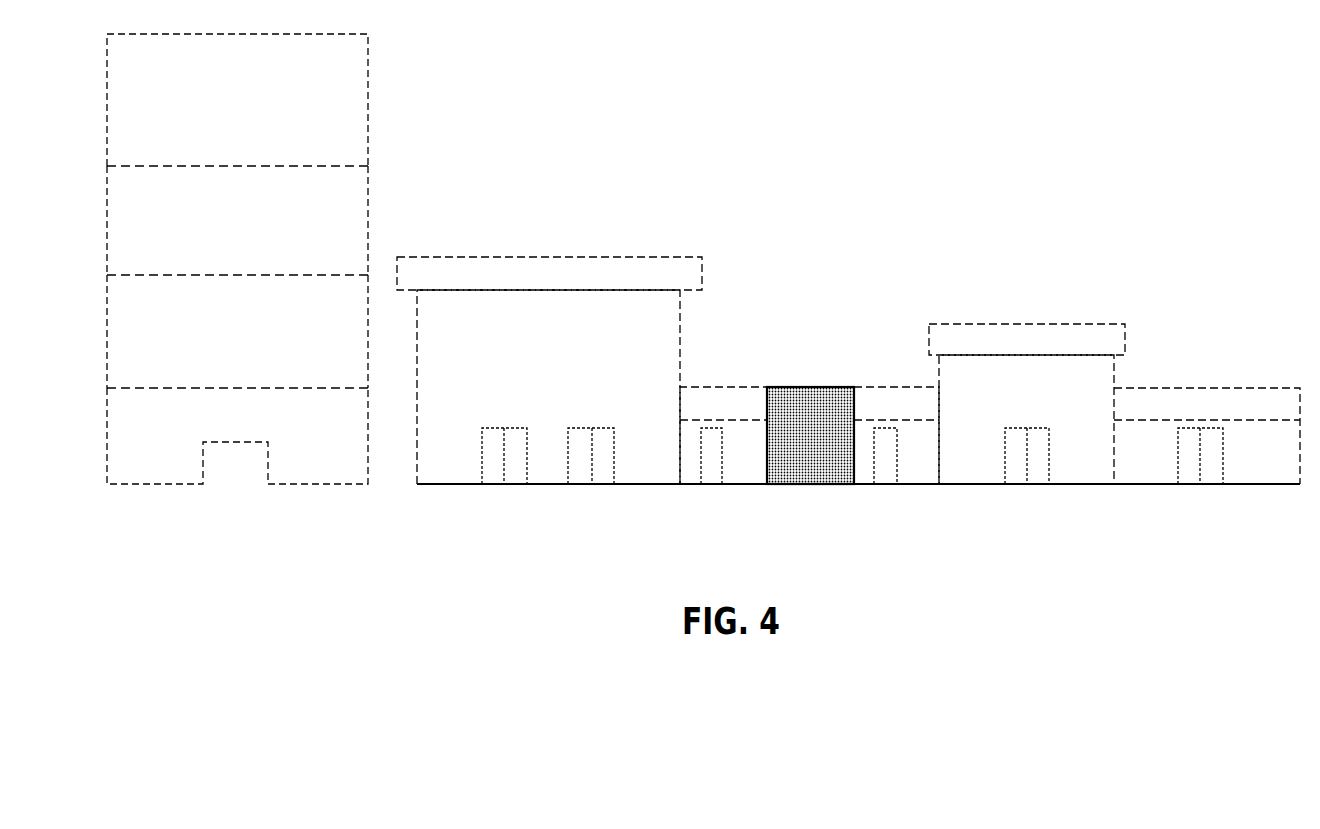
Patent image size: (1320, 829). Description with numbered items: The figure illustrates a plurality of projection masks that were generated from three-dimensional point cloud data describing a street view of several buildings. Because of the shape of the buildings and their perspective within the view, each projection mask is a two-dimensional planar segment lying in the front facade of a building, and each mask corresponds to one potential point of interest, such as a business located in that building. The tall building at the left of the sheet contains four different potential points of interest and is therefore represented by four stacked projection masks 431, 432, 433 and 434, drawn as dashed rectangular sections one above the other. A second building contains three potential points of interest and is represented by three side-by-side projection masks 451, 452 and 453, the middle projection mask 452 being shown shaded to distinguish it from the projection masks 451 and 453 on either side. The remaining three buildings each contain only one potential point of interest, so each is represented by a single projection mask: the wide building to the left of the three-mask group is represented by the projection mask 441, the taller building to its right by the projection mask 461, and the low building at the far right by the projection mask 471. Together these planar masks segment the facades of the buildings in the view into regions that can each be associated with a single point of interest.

The projection mask 431 is at (217, 115).
The projection mask 432 is at (217, 234).
The projection mask 433 is at (217, 351).
The projection mask 434 is at (215, 428).
The projection mask 441 is at (549, 370).
The projection mask 451 is at (701, 415).
The projection mask 452 is at (789, 449).
The projection mask 453 is at (867, 415).
The projection mask 461 is at (1027, 404).
The projection mask 471 is at (1207, 436).